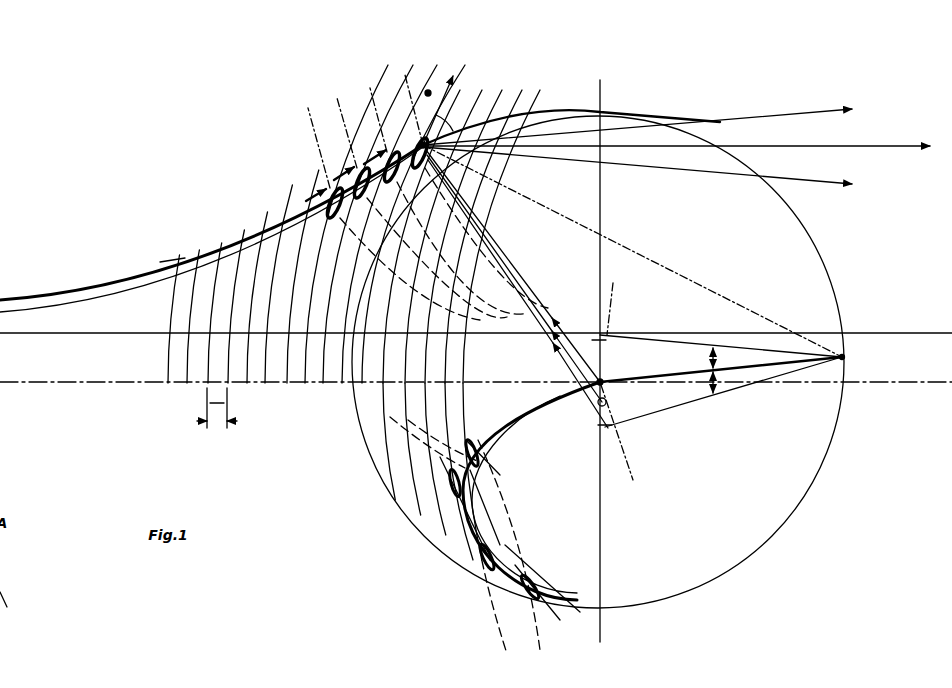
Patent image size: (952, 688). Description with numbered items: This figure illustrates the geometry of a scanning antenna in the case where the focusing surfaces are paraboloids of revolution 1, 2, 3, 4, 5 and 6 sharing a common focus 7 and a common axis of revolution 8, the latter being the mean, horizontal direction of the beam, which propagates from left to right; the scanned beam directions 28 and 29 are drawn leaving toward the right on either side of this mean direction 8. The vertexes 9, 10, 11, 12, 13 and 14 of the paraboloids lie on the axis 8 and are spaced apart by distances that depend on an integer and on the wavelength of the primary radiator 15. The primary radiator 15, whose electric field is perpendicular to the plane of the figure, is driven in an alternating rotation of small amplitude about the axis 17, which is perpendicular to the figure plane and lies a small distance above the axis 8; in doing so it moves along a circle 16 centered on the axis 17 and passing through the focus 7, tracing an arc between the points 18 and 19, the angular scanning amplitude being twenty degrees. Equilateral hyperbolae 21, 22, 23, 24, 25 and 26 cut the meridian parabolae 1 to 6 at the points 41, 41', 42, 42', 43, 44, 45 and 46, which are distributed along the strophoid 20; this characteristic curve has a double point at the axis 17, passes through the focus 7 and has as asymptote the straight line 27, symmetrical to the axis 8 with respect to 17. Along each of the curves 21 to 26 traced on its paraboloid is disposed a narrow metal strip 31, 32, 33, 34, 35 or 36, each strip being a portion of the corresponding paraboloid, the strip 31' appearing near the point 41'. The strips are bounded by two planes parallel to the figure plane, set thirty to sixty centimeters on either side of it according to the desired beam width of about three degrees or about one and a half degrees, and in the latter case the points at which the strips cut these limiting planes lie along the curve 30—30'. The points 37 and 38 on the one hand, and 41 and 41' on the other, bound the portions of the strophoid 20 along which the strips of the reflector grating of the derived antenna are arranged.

The paraboloid of revolution 1 is at (470, 401).
The paraboloid of revolution 2 is at (448, 419).
The paraboloid of revolution 3 is at (458, 77).
The paraboloid of revolution 4 is at (432, 87).
The paraboloid of revolution 5 is at (408, 87).
The paraboloid of revolution 6 is at (381, 87).
The common focus 7 is at (603, 376).
The axis of revolution 8 is at (920, 383).
The vertex 9 is at (465, 382).
The vertex 10 is at (445, 382).
The vertex 11 is at (362, 385).
The vertex 12 is at (342, 385).
The vertex 13 is at (323, 385).
The vertex 14 is at (304, 385).
The primary radiator 15 is at (607, 401).
The circle 16 is at (637, 479).
The axis of oscillatory motion 17 is at (837, 360).
The arc end point 18 is at (600, 341).
The arc end point 19 is at (610, 426).
The strophoid 20 is at (791, 223).
The equilateral hyperbola 21 is at (538, 632).
The equilateral hyperbola 22 is at (493, 634).
The equilateral hyperbola 23 is at (459, 239).
The equilateral hyperbola 24 is at (431, 249).
The equilateral hyperbola 25 is at (407, 266).
The equilateral hyperbola 26 is at (384, 278).
The asymptote line 27 is at (912, 334).
The ray 28 is at (790, 188).
The ray 29 is at (744, 120).
The limiting curve 30 is at (211, 228).
The limiting curve 30' is at (531, 491).
The metal strip 31 is at (542, 578).
The element 31' is at (490, 457).
The metal strip 32 is at (480, 518).
The metal strip 33 is at (418, 168).
The metal strip 34 is at (392, 184).
The metal strip 35 is at (362, 200).
The metal strip 36 is at (337, 222).
The strophoid boundary point 37 is at (173, 265).
The strophoid boundary point 38 is at (524, 114).
The intersection point 41 is at (522, 591).
The intersection point 41' is at (457, 452).
The intersection point 42 is at (475, 557).
The intersection point 42' is at (443, 483).
The intersection point 43 is at (420, 144).
The intersection point 44 is at (374, 159).
The intersection point 45 is at (342, 175).
The intersection point 46 is at (317, 197).